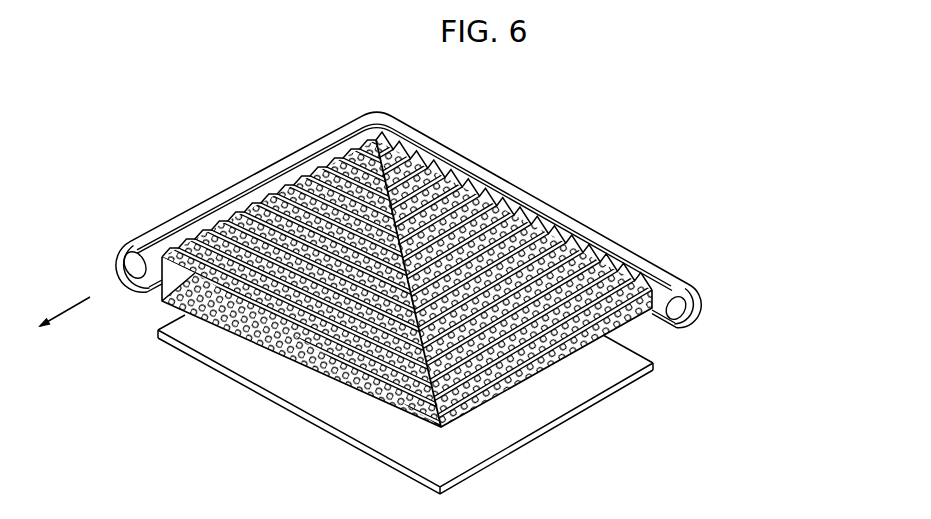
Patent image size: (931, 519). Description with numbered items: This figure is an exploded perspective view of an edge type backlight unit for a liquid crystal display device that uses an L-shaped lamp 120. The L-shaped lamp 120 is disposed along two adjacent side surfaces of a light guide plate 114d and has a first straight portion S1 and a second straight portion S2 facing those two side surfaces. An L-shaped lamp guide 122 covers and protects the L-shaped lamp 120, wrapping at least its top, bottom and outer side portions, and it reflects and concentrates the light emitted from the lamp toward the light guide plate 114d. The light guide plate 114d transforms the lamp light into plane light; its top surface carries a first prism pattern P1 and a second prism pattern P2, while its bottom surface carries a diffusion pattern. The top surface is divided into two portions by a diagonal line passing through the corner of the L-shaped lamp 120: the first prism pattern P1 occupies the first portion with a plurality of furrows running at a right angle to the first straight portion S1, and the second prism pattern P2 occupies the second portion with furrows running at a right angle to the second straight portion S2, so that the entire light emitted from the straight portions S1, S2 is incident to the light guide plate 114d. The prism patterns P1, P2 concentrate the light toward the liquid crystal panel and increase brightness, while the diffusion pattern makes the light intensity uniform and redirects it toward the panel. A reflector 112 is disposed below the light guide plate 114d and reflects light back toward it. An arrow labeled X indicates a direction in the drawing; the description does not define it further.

The reflector 112 is at (590, 402).
The light guide plate 114d is at (388, 288).
The first prism pattern P1 is at (300, 187).
The second prism pattern P2 is at (448, 188).
The first straight portion S1 is at (233, 210).
The second straight portion S2 is at (562, 232).
The L-shaped lamp 120 is at (465, 225).
The L-shaped lamp guide 122 is at (618, 247).
The X direction X is at (65, 304).